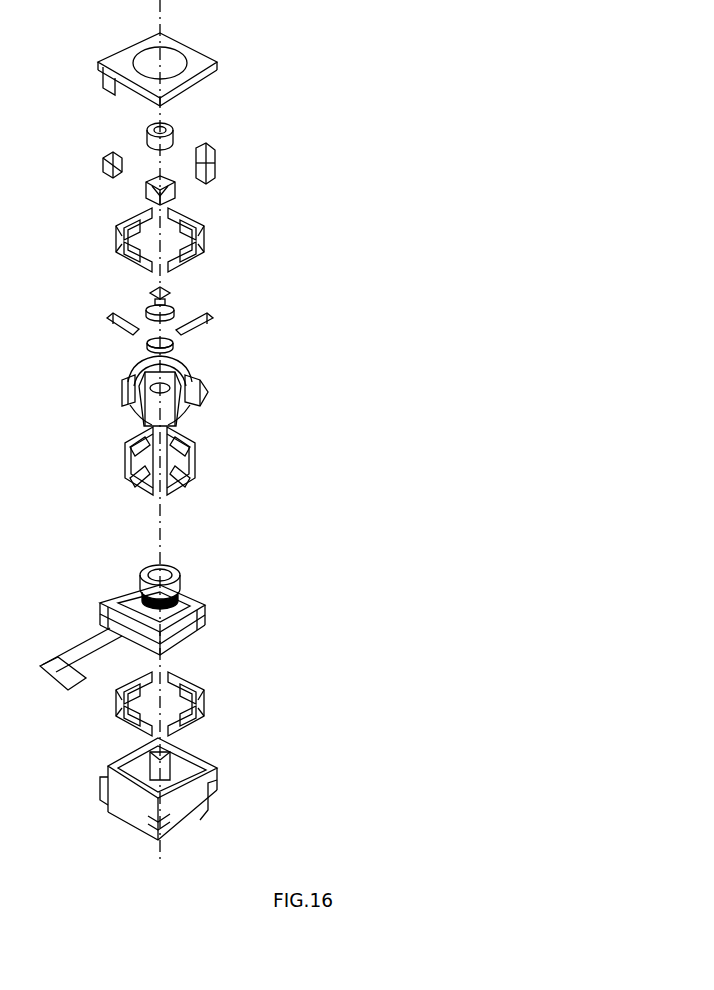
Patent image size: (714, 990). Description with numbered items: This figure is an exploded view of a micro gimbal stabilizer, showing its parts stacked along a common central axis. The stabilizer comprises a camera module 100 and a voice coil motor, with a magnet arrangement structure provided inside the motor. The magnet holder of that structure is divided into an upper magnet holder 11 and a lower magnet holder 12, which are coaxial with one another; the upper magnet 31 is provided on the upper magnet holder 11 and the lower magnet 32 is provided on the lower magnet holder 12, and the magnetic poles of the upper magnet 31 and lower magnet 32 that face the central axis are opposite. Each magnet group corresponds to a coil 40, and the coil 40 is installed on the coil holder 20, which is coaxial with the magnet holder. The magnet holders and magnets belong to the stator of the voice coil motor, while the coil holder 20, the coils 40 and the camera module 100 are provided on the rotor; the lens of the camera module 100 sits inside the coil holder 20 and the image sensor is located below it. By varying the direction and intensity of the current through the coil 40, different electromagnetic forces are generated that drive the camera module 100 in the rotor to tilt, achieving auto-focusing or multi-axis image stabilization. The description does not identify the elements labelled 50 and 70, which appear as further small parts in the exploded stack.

The upper magnet holder 11 is at (265, 73).
The sensor assembly 50 is at (248, 167).
The upper magnet 31 is at (227, 238).
The magnet assembly 70 is at (240, 312).
The coil holder 20 is at (240, 378).
The coil 40 is at (225, 442).
The camera module 100 is at (265, 535).
The lower magnet 32 is at (227, 702).
The lower magnet holder 12 is at (238, 788).